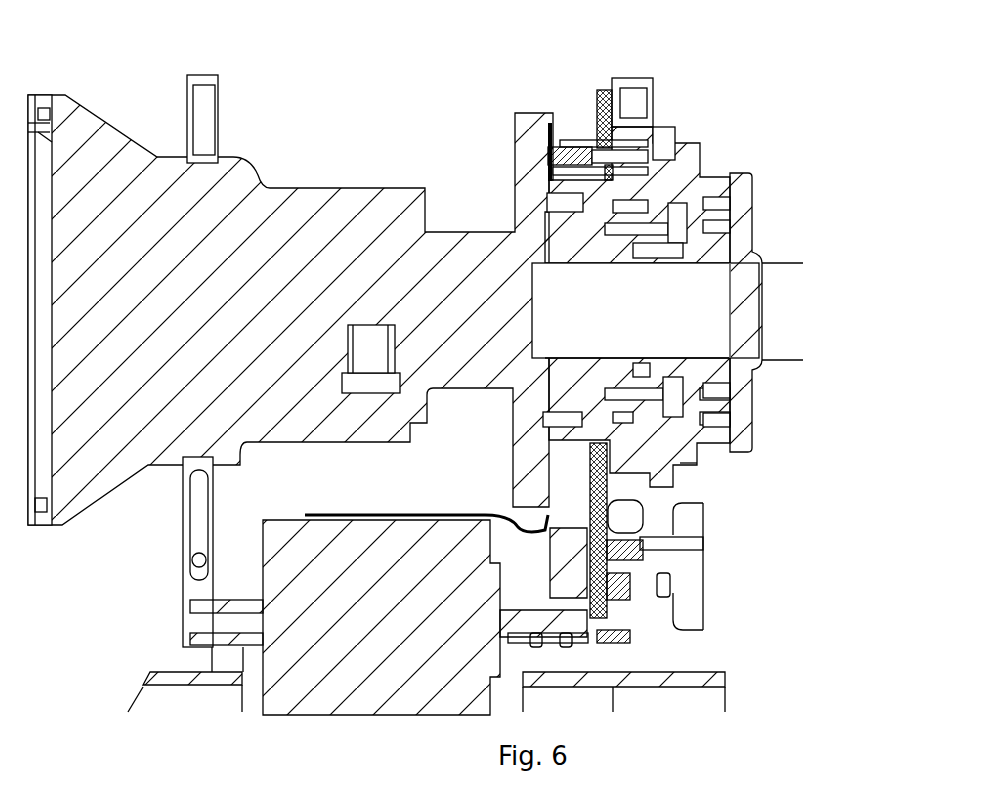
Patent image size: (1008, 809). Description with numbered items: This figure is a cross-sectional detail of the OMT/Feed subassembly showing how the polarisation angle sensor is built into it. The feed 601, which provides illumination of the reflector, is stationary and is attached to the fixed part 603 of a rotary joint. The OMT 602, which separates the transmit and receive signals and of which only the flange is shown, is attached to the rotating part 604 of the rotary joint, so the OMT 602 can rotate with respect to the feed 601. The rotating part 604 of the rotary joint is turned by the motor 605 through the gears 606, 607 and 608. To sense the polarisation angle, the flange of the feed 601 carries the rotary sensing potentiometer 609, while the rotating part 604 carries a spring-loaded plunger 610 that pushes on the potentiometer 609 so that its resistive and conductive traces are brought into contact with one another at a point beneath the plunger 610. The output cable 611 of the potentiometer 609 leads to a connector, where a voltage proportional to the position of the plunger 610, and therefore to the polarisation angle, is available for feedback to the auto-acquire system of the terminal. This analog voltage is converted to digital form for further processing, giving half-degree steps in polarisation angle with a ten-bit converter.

The feed 601 is at (290, 300).
The OMT 602 is at (712, 330).
The fixed part of the rotary joint 603 is at (578, 237).
The rotating part of the rotary joint 604 is at (702, 247).
The motor 605 is at (426, 586).
The gear 606 is at (628, 638).
The gear 607 is at (628, 552).
The gear 608 is at (610, 117).
The rotary sensing potentiometer 609 is at (550, 140).
The spring-loaded plunger 610 is at (577, 148).
The output cable 611 is at (402, 515).